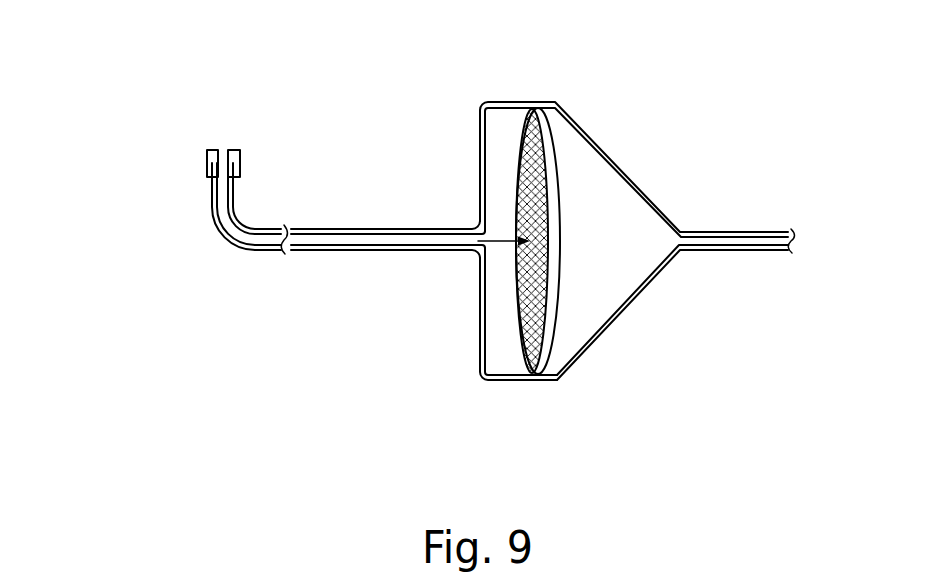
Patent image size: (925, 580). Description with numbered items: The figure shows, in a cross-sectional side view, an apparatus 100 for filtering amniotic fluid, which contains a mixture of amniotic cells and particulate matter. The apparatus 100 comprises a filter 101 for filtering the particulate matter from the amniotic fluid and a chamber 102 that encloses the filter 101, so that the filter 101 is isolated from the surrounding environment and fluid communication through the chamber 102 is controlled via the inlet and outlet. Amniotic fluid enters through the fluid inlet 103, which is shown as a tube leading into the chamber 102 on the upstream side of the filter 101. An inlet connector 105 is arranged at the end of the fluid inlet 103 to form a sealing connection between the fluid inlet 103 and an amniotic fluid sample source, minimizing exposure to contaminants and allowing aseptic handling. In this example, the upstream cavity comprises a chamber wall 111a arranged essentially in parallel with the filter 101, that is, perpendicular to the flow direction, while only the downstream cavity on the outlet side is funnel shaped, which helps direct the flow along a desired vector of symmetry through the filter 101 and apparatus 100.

The apparatus 100 is at (195, 51).
The filter 101 is at (528, 114).
The chamber 102 is at (481, 182).
The fluid inlet 103 is at (462, 243).
The inlet connector 105 is at (226, 270).
The chamber wall 111a is at (481, 335).